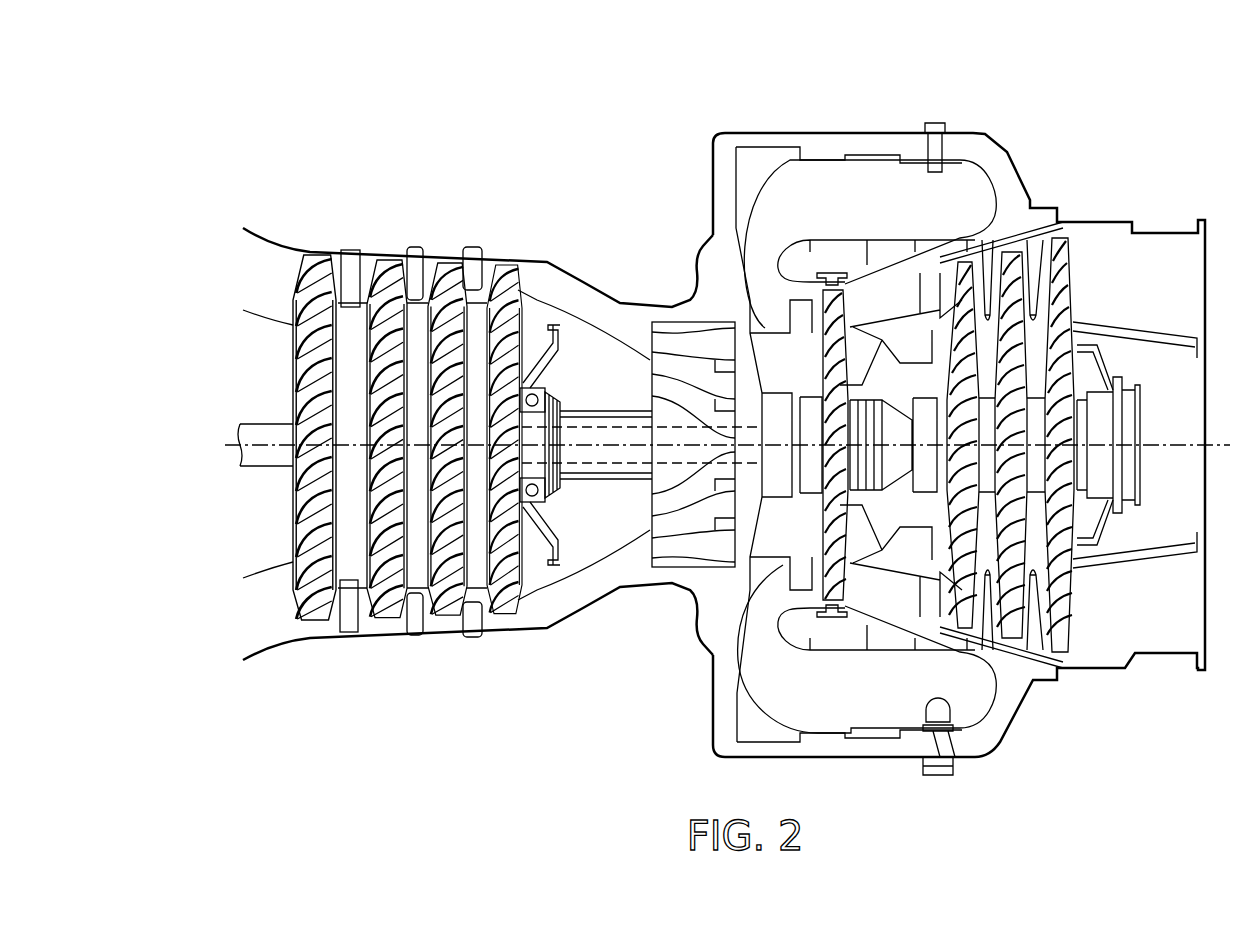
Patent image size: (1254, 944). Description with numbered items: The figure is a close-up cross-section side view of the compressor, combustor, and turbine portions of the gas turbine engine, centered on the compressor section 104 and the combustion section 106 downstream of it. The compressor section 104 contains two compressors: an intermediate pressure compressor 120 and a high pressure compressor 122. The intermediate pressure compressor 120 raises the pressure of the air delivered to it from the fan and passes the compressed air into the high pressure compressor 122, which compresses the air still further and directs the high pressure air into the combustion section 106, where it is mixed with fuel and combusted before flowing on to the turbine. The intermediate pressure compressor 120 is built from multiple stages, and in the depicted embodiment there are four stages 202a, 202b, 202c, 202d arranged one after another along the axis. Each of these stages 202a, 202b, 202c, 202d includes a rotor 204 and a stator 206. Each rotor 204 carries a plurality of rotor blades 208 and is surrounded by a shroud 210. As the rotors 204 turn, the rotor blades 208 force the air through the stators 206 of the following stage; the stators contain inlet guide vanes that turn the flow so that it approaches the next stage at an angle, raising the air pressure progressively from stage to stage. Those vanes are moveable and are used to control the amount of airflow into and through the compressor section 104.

The compressor section 104 is at (705, 106).
The combustion section 106 is at (1222, 106).
The intermediate pressure compressor 120 is at (525, 678).
The high pressure compressor 122 is at (532, 678).
The first stage 202a is at (287, 237).
The second stage 202b is at (352, 251).
The third stage 202c is at (414, 237).
The fourth stage 202d is at (477, 253).
The rotor 204 is at (293, 578).
The stator 206 is at (353, 627).
The rotor blades 208 is at (293, 302).
The shroud 210 is at (603, 285).